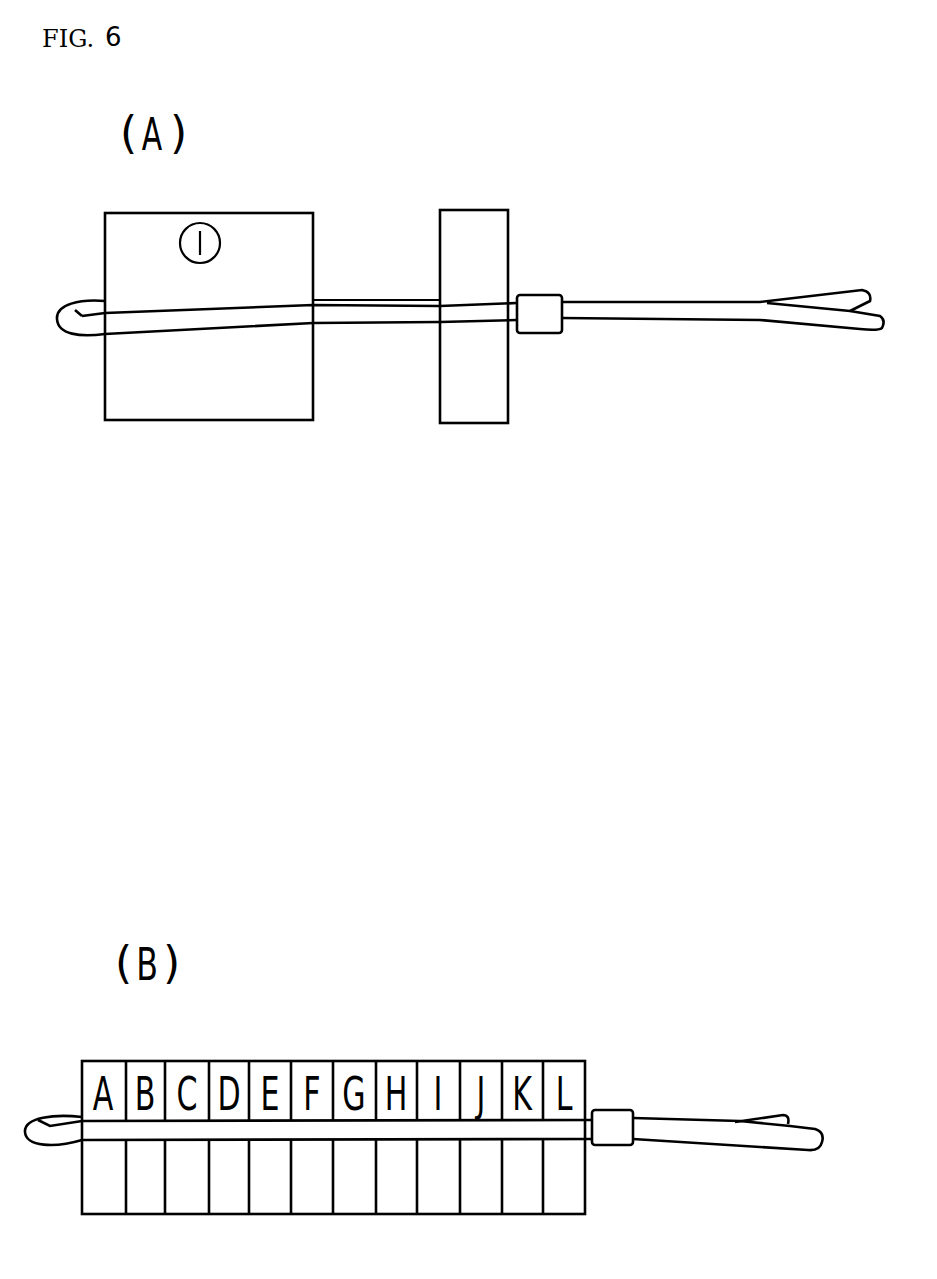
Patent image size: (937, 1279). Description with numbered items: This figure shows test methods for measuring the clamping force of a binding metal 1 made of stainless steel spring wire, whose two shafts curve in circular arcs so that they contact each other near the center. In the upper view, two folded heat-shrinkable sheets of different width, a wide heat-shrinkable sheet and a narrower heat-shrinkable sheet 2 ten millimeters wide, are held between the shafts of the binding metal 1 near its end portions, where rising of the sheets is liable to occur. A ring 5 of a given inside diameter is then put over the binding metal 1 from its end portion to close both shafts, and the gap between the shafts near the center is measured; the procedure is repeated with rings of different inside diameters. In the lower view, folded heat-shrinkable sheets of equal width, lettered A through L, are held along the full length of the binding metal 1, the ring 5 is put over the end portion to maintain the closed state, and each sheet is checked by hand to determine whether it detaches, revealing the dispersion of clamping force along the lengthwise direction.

The binding metal 1 is at (383, 317).
The heat-shrinkable sheet 2 is at (474, 316).
The ring 5 is at (547, 322).